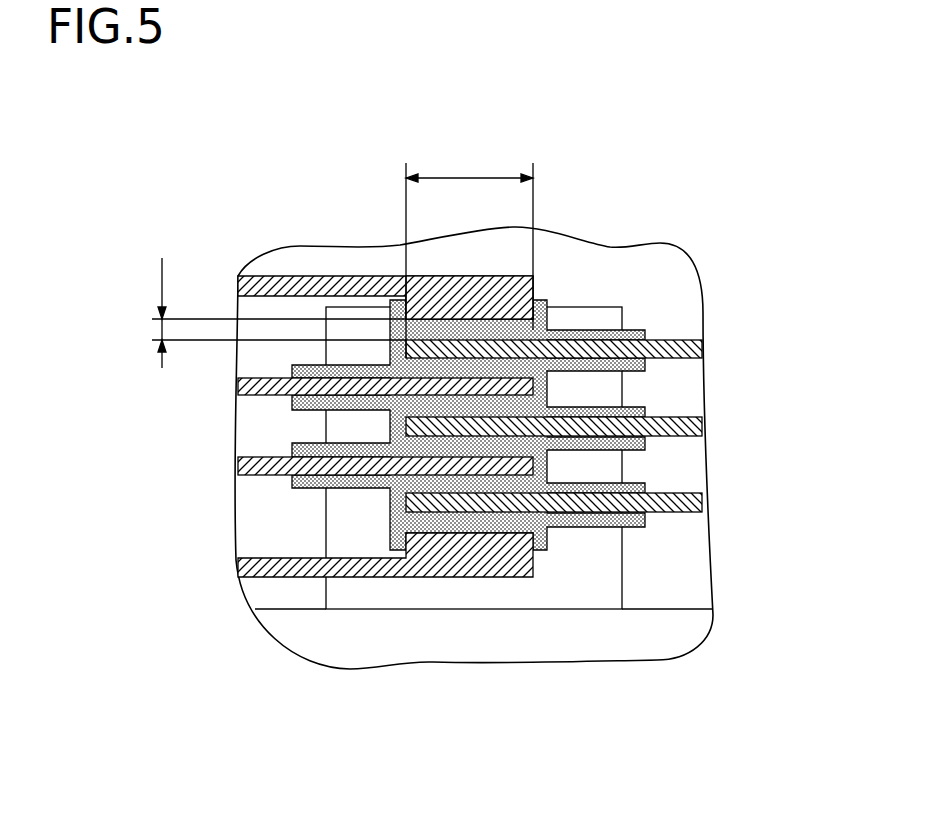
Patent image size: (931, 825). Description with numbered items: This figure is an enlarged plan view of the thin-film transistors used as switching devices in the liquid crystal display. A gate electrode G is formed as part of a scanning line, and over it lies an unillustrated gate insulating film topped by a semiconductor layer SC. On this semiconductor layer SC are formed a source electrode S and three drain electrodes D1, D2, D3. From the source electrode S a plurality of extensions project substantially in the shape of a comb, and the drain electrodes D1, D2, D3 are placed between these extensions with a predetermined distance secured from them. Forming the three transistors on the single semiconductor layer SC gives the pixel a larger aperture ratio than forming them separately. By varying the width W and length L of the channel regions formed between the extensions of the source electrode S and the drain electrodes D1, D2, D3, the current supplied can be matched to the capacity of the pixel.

The gate electrode G is at (597, 570).
The source electrode S is at (312, 276).
The semiconductor layer SC is at (580, 330).
The first drain electrode D1 is at (695, 340).
The second drain electrode D2 is at (693, 417).
The third drain electrode D3 is at (692, 493).
The channel length L is at (469, 248).
The channel width W is at (264, 313).